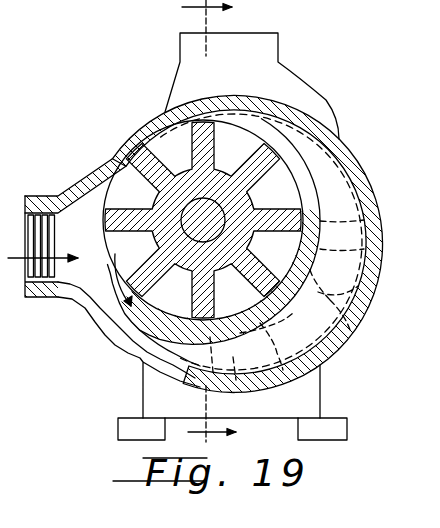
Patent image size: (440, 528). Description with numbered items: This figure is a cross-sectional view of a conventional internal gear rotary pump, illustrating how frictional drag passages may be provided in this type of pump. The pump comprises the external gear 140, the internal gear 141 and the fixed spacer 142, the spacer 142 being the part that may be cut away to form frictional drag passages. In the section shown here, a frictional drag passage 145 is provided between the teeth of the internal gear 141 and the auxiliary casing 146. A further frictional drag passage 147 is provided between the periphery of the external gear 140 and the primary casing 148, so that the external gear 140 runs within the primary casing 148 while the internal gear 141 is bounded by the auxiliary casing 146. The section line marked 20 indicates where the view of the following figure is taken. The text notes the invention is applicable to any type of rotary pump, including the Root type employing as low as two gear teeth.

The section line 20- 20 is at (197, 17).
The external gear 140 is at (106, 173).
The internal gear 141 is at (128, 167).
The fixed spacer 142 is at (338, 340).
The frictional drag passage 145 is at (221, 281).
The auxiliary casing 146 is at (234, 346).
The frictional drag passage 147 is at (152, 372).
The primary casing 148 is at (204, 389).